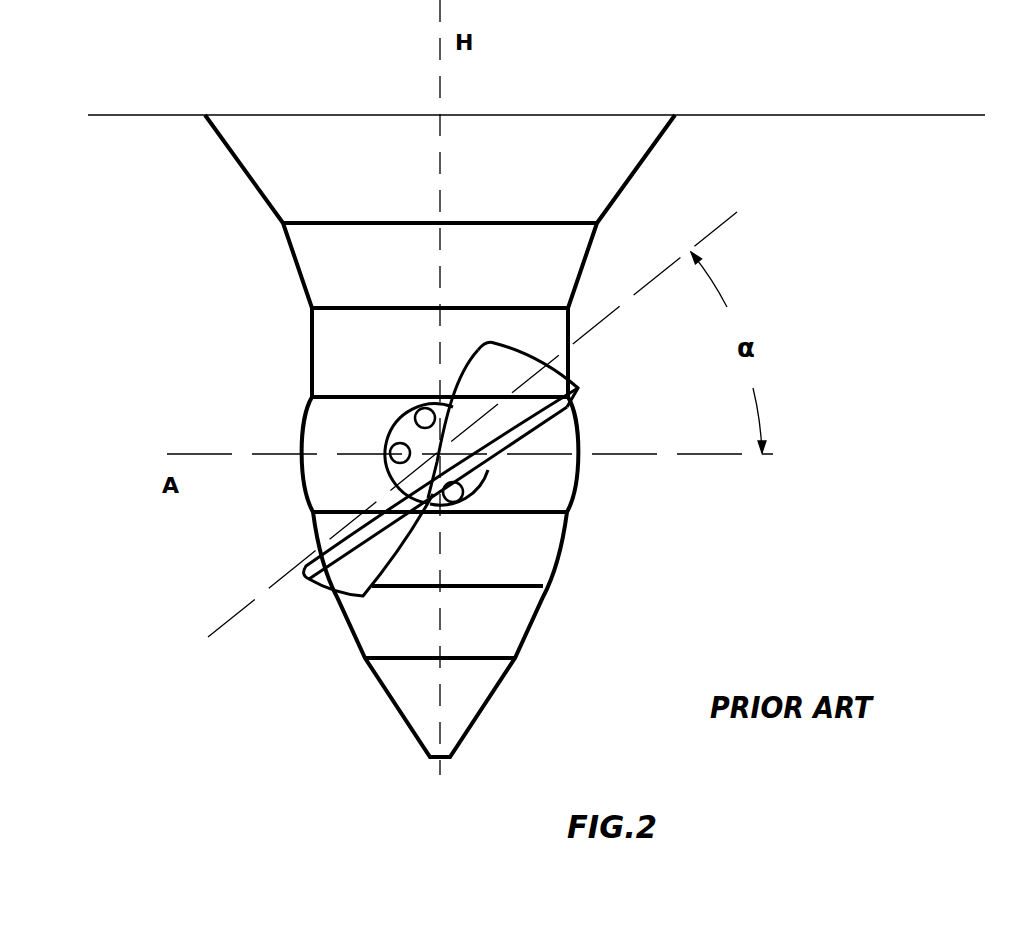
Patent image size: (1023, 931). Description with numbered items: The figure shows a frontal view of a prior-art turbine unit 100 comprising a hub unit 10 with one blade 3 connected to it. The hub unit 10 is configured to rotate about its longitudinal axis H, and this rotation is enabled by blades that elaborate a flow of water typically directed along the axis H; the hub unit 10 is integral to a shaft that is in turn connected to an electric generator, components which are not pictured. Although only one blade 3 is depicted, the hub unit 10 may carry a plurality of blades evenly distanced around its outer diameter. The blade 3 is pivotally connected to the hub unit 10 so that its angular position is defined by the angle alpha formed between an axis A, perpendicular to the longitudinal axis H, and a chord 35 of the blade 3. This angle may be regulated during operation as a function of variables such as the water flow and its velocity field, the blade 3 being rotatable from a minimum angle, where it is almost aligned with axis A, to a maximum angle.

The turbine unit 100 is at (802, 210).
The hub unit 10 is at (367, 435).
The blade 3 is at (508, 418).
The chord 35 is at (417, 470).